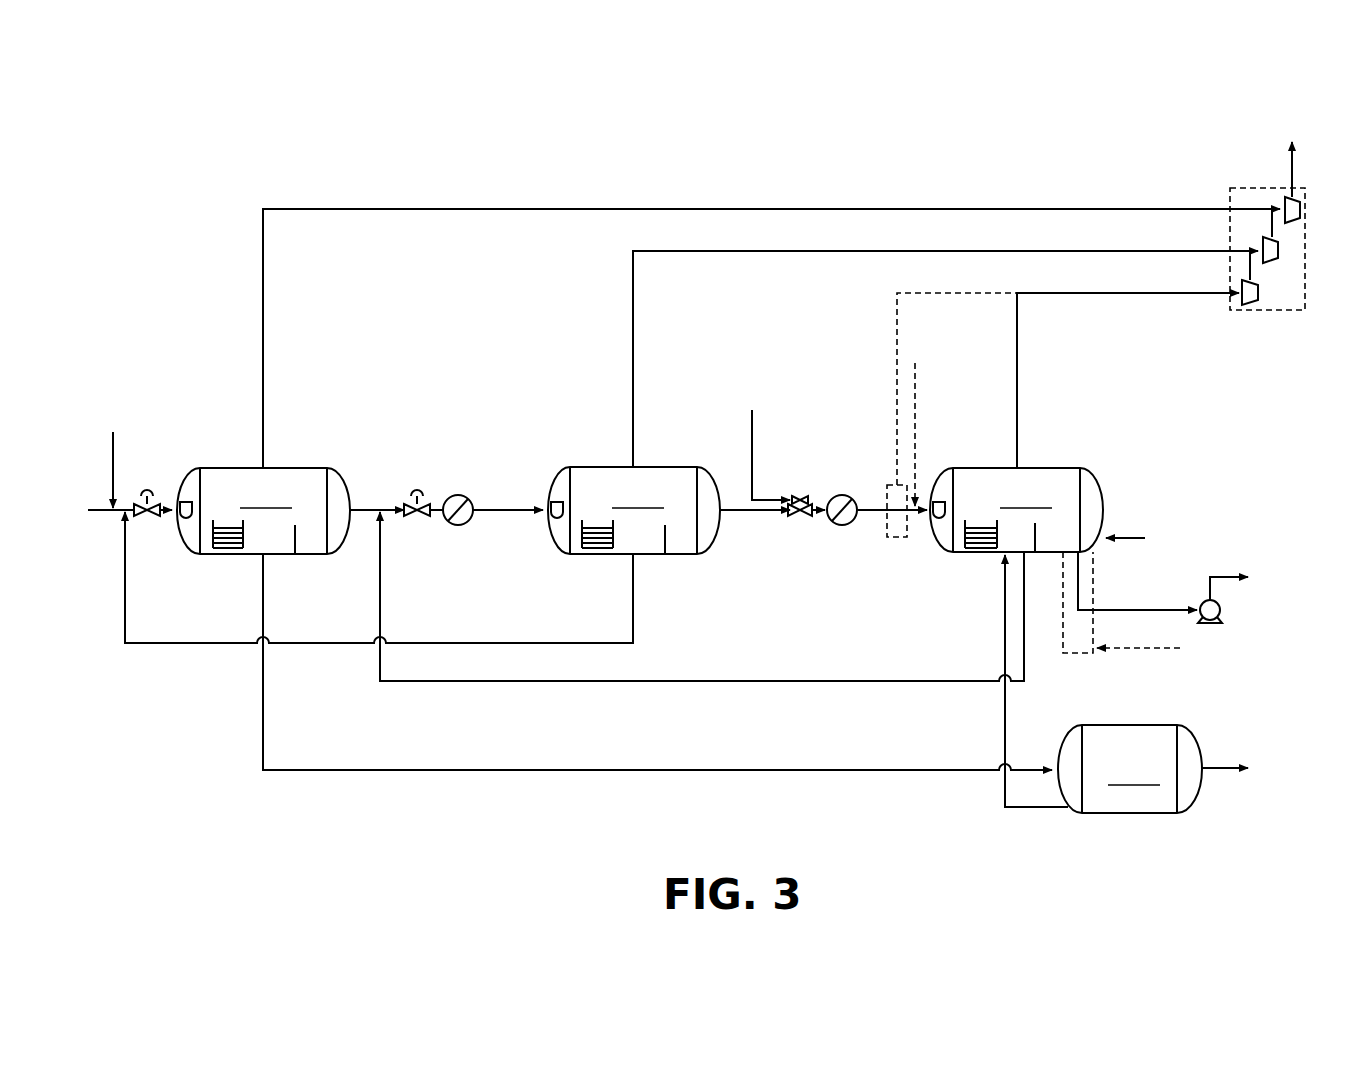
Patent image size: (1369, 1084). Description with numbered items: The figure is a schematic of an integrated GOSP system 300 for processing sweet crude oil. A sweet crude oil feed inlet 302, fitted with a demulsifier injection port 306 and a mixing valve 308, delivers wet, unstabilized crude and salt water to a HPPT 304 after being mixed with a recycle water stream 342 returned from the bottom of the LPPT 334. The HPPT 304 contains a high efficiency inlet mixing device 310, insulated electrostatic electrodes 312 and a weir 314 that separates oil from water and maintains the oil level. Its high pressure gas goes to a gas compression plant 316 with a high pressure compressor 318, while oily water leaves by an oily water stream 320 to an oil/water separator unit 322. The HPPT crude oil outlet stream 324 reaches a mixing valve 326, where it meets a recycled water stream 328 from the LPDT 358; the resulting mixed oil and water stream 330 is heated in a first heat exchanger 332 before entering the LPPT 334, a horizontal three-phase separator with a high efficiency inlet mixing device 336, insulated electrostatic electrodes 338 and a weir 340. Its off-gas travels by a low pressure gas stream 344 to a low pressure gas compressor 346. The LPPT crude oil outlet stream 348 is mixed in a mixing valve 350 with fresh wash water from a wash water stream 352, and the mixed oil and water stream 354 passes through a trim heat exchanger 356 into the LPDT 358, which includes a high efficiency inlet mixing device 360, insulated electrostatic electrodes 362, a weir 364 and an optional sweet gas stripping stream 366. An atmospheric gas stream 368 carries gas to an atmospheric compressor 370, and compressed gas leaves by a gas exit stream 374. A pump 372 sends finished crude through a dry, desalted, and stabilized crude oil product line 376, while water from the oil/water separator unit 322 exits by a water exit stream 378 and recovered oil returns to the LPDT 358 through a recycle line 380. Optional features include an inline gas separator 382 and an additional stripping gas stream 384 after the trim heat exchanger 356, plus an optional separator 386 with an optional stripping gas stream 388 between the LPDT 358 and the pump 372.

The integrated GOSP system 300 is at (945, 147).
The sweet crude oil feed inlet 302 is at (88, 510).
The HPPT 304 is at (263, 511).
The demulsifier injection port 306 is at (113, 448).
The mixing valve 308 is at (147, 494).
The high efficiency inlet mixing device 310 is at (175, 512).
The insulated electrostatic electrodes 312 is at (228, 550).
The weir 314 is at (360, 207).
The gas compression plant 316 is at (1255, 188).
The high pressure compressor 318 is at (1295, 222).
The oily water stream 320 is at (263, 717).
The oil/water separator unit 322 is at (1130, 769).
The HPPT crude oil outlet stream 324 is at (365, 505).
The mixing valve 326 is at (417, 494).
The recycled water stream 328 is at (697, 683).
The mixed oil and water stream 330 is at (432, 506).
The first heat exchanger 332 is at (455, 527).
The LPPT 334 is at (634, 510).
The high efficiency inlet mixing device 336 is at (548, 515).
The insulated electrostatic electrodes 338 is at (600, 550).
The weir 340 is at (668, 548).
The recycle water stream 342 is at (467, 642).
The low pressure gas stream 344 is at (680, 253).
The low pressure gas compressor 346 is at (1280, 262).
The LPPT crude oil outlet stream 348 is at (740, 518).
The mixing valve 350 is at (800, 497).
The wash water stream 352 is at (752, 430).
The mixed oil and water stream 354 is at (817, 498).
The trim heat exchanger 356 is at (838, 527).
The LPDT 358 is at (1016, 510).
The high efficiency inlet mixing device 360 is at (930, 515).
The insulated electrostatic electrodes 362 is at (988, 550).
The weir 364 is at (1037, 530).
The sweet gas stripping stream 366 is at (1133, 538).
The atmospheric gas stream 368 is at (1063, 294).
The atmospheric compressor 370 is at (1250, 306).
The pump 372 is at (1215, 625).
The gas exit stream 374 is at (1295, 160).
The dry, desalted, and stabilized crude oil product line 376 is at (1235, 575).
The water exit stream 378 is at (1225, 766).
The recycle line 380 is at (1003, 800).
The inline gas separator 382 is at (897, 483).
The additional stripping gas stream 384 is at (918, 400).
The separator 386 is at (1075, 656).
The stripping gas stream 388 is at (1150, 650).